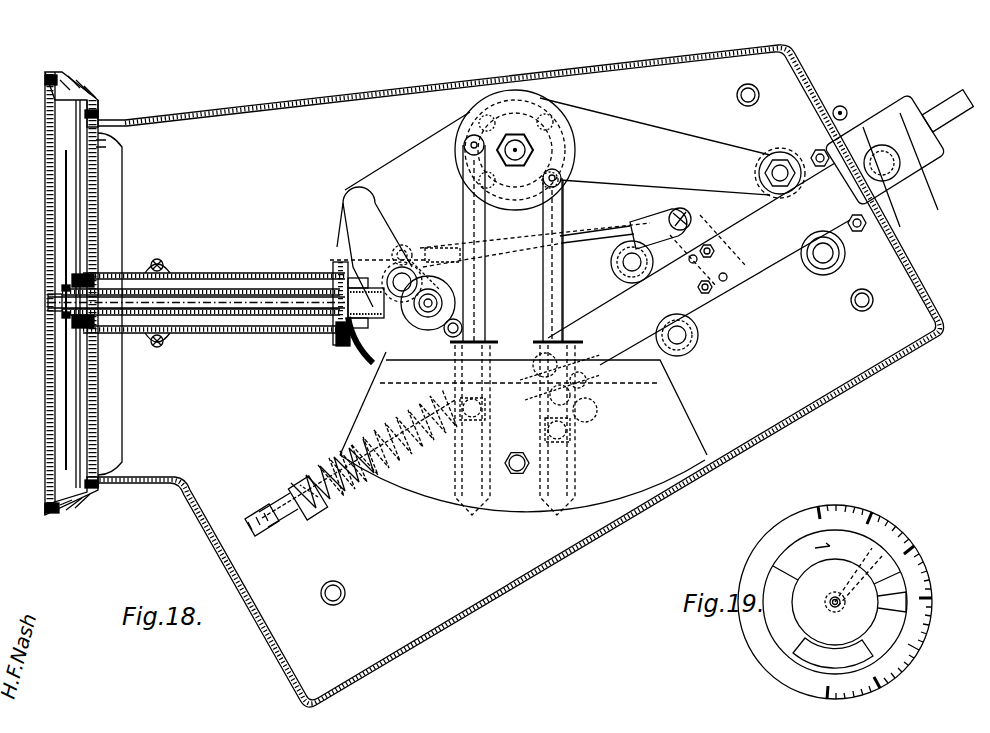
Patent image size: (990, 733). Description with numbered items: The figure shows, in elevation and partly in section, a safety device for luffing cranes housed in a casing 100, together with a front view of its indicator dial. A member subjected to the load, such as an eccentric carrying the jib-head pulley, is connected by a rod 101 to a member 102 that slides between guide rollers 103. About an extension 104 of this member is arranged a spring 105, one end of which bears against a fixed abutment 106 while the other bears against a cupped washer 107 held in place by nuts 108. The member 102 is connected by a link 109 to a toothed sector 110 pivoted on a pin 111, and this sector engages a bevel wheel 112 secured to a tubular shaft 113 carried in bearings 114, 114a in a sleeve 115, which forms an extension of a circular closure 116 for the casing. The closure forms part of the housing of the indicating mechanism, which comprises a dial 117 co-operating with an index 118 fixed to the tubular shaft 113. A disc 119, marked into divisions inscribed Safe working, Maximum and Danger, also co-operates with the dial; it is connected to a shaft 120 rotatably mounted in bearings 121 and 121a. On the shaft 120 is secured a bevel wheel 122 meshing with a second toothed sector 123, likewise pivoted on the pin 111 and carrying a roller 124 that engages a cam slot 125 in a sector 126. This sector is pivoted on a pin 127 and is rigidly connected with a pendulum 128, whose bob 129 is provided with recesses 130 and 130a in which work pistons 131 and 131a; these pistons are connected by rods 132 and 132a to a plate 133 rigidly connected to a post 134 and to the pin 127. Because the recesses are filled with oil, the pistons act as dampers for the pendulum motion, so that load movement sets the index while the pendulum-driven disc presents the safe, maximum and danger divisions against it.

In FIG. 18, the casing 100 is at (385, 90).
In FIG. 18, the rod 101 is at (948, 118).
In FIG. 18, the member 102 is at (742, 266).
In FIG. 18, the guide rollers 103 is at (611, 264).
In FIG. 18, the extension 104 is at (362, 495).
In FIG. 18, the spring 105 is at (332, 468).
In FIG. 18, the fixed abutment 106 is at (582, 398).
In FIG. 18, the cupped washer 107 is at (300, 480).
In FIG. 18, the nuts 108 is at (270, 505).
In FIG. 18, the link 109 is at (612, 230).
In FIG. 18, the toothed sector 110 is at (338, 347).
In FIG. 18, the pin 111 is at (438, 303).
In FIG. 18, the bevel wheel 112 is at (335, 282).
In FIG. 18, the tubular shaft 113 is at (202, 316).
In FIG. 18, the bearing 114 is at (345, 276).
In FIG. 18, the bearing 114a is at (100, 335).
In FIG. 18, the sleeve 115 is at (242, 334).
In FIG. 18, the circular closure 116 is at (90, 422).
In FIG. 18, the dial 117 is at (96, 143).
In FIG. 19, the dial 117 is at (855, 510).
In FIG. 18, the index 118 is at (80, 220).
In FIG. 19, the index 118 is at (878, 578).
In FIG. 18, the disc 119 is at (68, 185).
In FIG. 19, the disc 119 is at (820, 540).
In FIG. 18, the shaft 120 is at (216, 282).
In FIG. 18, the bearing 121 is at (380, 278).
In FIG. 18, the bearing 121a is at (110, 272).
In FIG. 18, the bevel wheel 122 is at (376, 315).
In FIG. 18, the toothed sector 123 is at (378, 384).
In FIG. 18, the roller 124 is at (414, 266).
In FIG. 18, the cam slot 125 is at (357, 200).
In FIG. 18, the sector 126 is at (410, 160).
In FIG. 18, the pin 127 is at (530, 152).
In FIG. 18, the pendulum 128 is at (565, 300).
In FIG. 18, the bob 129 is at (660, 420).
In FIG. 18, the recess 130 is at (545, 438).
In FIG. 18, the recess 130a is at (474, 438).
In FIG. 18, the piston 131 is at (572, 430).
In FIG. 18, the piston 131a is at (496, 415).
In FIG. 18, the rod 132 is at (547, 255).
In FIG. 18, the rod 132a is at (493, 238).
In FIG. 18, the plate 133 is at (696, 148).
In FIG. 18, the post 134 is at (781, 167).